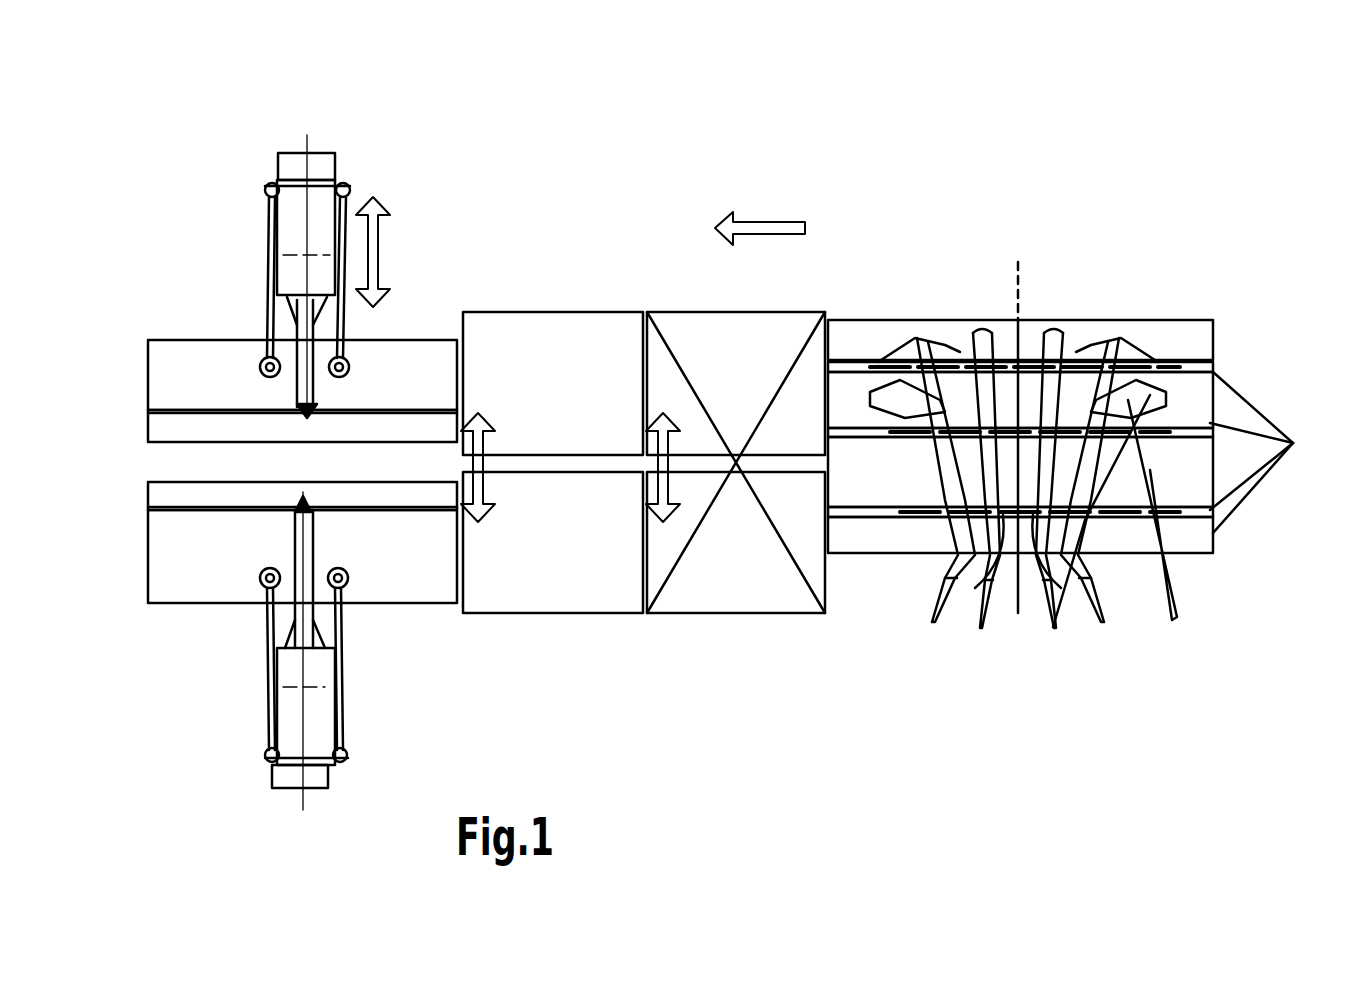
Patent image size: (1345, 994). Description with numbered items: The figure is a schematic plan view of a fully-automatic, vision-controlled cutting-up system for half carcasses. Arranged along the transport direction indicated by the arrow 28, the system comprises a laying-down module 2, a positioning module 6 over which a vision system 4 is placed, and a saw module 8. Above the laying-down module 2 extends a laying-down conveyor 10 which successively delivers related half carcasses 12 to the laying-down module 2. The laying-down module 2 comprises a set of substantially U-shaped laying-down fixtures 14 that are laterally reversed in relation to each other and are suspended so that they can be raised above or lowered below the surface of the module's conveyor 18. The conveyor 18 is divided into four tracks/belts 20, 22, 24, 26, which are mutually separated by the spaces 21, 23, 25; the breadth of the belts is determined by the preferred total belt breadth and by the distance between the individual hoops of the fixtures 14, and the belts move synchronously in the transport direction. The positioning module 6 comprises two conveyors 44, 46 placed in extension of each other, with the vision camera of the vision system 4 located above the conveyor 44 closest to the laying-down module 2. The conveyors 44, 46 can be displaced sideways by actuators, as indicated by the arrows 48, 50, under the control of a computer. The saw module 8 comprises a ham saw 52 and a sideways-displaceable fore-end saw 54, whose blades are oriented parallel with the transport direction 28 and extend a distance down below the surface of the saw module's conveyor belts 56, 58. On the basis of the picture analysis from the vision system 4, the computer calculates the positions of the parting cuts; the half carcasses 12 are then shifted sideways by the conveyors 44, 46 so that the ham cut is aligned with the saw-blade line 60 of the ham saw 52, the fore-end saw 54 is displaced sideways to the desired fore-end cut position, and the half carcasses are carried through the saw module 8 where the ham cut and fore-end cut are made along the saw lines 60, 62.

The laying-down module 2 is at (1077, 339).
The vision system 4 is at (736, 462).
The positioning module 6 is at (735, 331).
The saw module 8 is at (302, 240).
The laying-down conveyor 10 is at (1049, 436).
The half carcasses 12 is at (1018, 439).
The laying-down fixtures 14 is at (1205, 619).
The conveyor 18 is at (1268, 452).
The track/belt 20 is at (1203, 356).
The space 21 is at (1042, 352).
The track/belt 22 is at (1203, 415).
The space 23 is at (1041, 440).
The track/belt 24 is at (1203, 490).
The space 25 is at (1040, 496).
The track/belt 26 is at (1203, 545).
The arrow 28 is at (760, 209).
The conveyor 44 is at (736, 542).
The conveyor 46 is at (553, 542).
The arrow 48 is at (735, 417).
The arrow 50 is at (552, 417).
The ham saw 52 is at (275, 651).
The fore-end saw 54 is at (296, 276).
The conveyor belt 56 is at (302, 375).
The conveyor belt 58 is at (302, 556).
The saw-blade line 60 is at (302, 494).
The saw line 62 is at (302, 423).